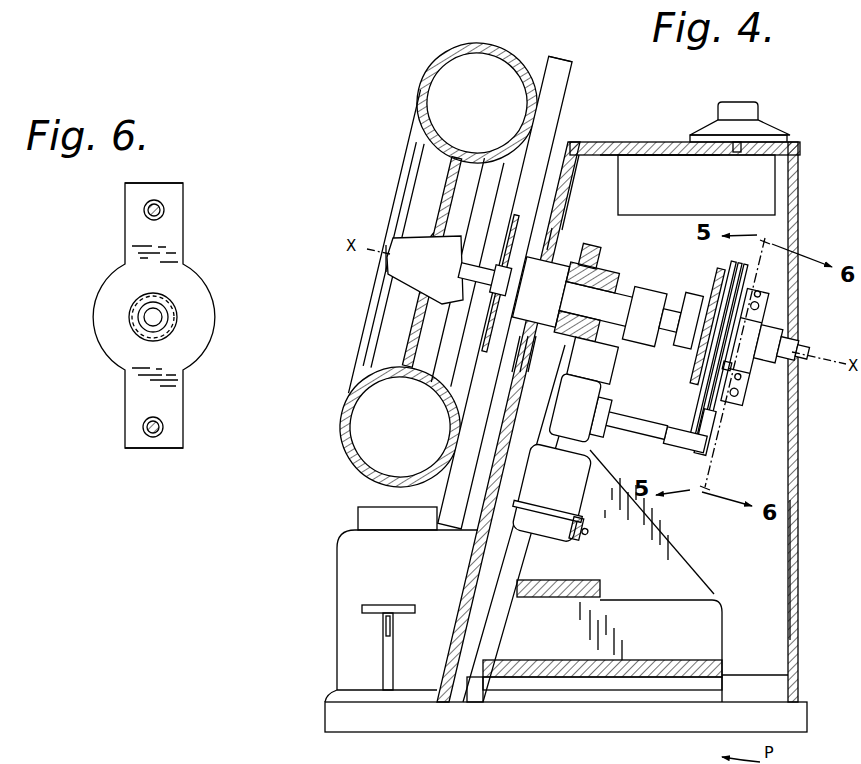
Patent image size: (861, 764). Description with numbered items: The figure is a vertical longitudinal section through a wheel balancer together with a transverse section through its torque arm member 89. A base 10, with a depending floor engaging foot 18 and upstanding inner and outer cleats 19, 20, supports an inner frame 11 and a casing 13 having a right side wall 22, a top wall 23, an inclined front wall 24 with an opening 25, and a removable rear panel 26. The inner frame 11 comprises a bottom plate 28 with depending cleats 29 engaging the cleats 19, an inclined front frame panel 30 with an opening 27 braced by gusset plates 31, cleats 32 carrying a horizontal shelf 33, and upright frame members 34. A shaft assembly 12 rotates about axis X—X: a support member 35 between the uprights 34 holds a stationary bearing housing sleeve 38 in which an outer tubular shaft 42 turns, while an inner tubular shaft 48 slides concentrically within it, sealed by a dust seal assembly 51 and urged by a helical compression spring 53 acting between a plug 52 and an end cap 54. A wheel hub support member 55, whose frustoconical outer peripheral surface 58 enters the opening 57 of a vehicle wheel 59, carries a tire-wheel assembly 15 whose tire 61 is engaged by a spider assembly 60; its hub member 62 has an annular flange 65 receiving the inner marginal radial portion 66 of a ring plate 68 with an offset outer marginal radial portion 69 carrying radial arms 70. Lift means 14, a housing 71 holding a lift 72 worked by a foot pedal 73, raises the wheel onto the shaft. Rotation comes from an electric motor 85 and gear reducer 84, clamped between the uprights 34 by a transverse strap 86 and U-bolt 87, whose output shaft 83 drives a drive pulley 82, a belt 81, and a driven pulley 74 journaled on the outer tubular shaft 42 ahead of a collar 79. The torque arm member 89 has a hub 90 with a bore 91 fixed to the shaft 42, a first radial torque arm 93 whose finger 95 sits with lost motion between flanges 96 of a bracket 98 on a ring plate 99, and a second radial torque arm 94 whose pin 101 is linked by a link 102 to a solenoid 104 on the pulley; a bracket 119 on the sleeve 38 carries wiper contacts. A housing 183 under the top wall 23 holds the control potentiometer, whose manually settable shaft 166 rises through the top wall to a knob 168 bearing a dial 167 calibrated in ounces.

In FIG. 4, the base 10 is at (322, 706).
In FIG. 4, the inner frame 11 is at (592, 238).
In FIG. 4, the shaft assembly 12 is at (608, 302).
In FIG. 4, the casing 13 is at (794, 140).
In FIG. 4, the lift means 14 is at (345, 533).
In FIG. 4, the tire-wheel assembly 15 is at (412, 337).
In FIG. 4, the floor engaging foot 18 is at (345, 722).
In FIG. 4, the inner cleat 19 is at (496, 705).
In FIG. 4, the outer cleat 20 is at (790, 690).
In FIG. 4, the right side wall 22 is at (798, 568).
In FIG. 4, the top wall 23 is at (648, 141).
In FIG. 4, the front wall 24 is at (562, 175).
In FIG. 4, the opening 25 is at (558, 252).
In FIG. 4, the rear panel 26 is at (799, 447).
In FIG. 4, the opening 27 is at (593, 360).
In FIG. 4, the bottom plate 28 is at (680, 660).
In FIG. 4, the depending cleat 29 is at (668, 694).
In FIG. 4, the front frame panel 30 is at (598, 257).
In FIG. 4, the gusset plate 31 is at (686, 574).
In FIG. 4, the cleat 32 is at (722, 624).
In FIG. 4, the shelf 33 is at (600, 590).
In FIG. 4, the upright frame member 34 is at (562, 563).
In FIG. 4, the support member 35 is at (648, 290).
In FIG. 4, the bearing housing sleeve 38 is at (660, 320).
In FIG. 4, the outer tubular shaft 42 is at (780, 356).
In FIG. 6, the outer tubular shaft 42 is at (165, 312).
In FIG. 4, the inner tubular shaft 48 is at (466, 282).
In FIG. 4, the dust seal assembly 51 is at (506, 281).
In FIG. 4, the plug 52 is at (786, 345).
In FIG. 6, the helical compression spring 53 is at (165, 326).
In FIG. 4, the end cap 54 is at (384, 258).
In FIG. 4, the wheel hub support member 55 is at (408, 218).
In FIG. 4, the opening 57 is at (452, 246).
In FIG. 4, the outer peripheral surface 58 is at (443, 275).
In FIG. 4, the vehicle wheel 59 is at (446, 178).
In FIG. 4, the spider assembly 60 is at (563, 62).
In FIG. 4, the tire 61 is at (424, 92).
In FIG. 4, the hub member 62 is at (547, 305).
In FIG. 4, the annular flange 65 is at (533, 352).
In FIG. 4, the inner marginal radial portion 66 is at (497, 305).
In FIG. 4, the ring plate 68 is at (536, 354).
In FIG. 4, the outer marginal radial portion 69 is at (539, 360).
In FIG. 4, the radial arm 70 is at (552, 76).
In FIG. 4, the housing 71 is at (337, 565).
In FIG. 4, the lift 72 is at (358, 515).
In FIG. 4, the foot pedal 73 is at (362, 608).
In FIG. 4, the driven pulley 74 is at (698, 390).
In FIG. 4, the collar 79 is at (738, 360).
In FIG. 4, the belt 81 is at (694, 410).
In FIG. 4, the drive pulley 82 is at (672, 452).
In FIG. 4, the output shaft 83 is at (646, 440).
In FIG. 4, the gear reducer 84 is at (580, 411).
In FIG. 4, the electric motor 85 is at (562, 501).
In FIG. 4, the transverse strap 86 is at (577, 520).
In FIG. 4, the U-bolt 87 is at (541, 502).
In FIG. 4, the torque arm member 89 is at (770, 318).
In FIG. 6, the torque arm member 89 is at (122, 254).
In FIG. 4, the hub 90 is at (776, 330).
In FIG. 6, the bore 91 is at (130, 310).
In FIG. 4, the first radial torque arm 93 is at (742, 400).
In FIG. 6, the first radial torque arm 93 is at (132, 402).
In FIG. 4, the second radial torque arm 94 is at (768, 290).
In FIG. 6, the second radial torque arm 94 is at (172, 196).
In FIG. 4, the finger 95 is at (730, 408).
In FIG. 6, the finger 95 is at (165, 428).
In FIG. 4, the flange 96 is at (740, 380).
In FIG. 4, the bracket 98 is at (712, 430).
In FIG. 4, the ring plate 99 is at (742, 264).
In FIG. 4, the pin 101 is at (748, 290).
In FIG. 6, the pin 101 is at (156, 200).
In FIG. 4, the link 102 is at (742, 286).
In FIG. 4, the solenoid 104 is at (726, 318).
In FIG. 4, the bracket 119 is at (696, 300).
In FIG. 4, the manually settable shaft 166 is at (735, 153).
In FIG. 4, the dial 167 is at (756, 128).
In FIG. 4, the knob 168 is at (738, 102).
In FIG. 4, the housing 183 is at (776, 182).